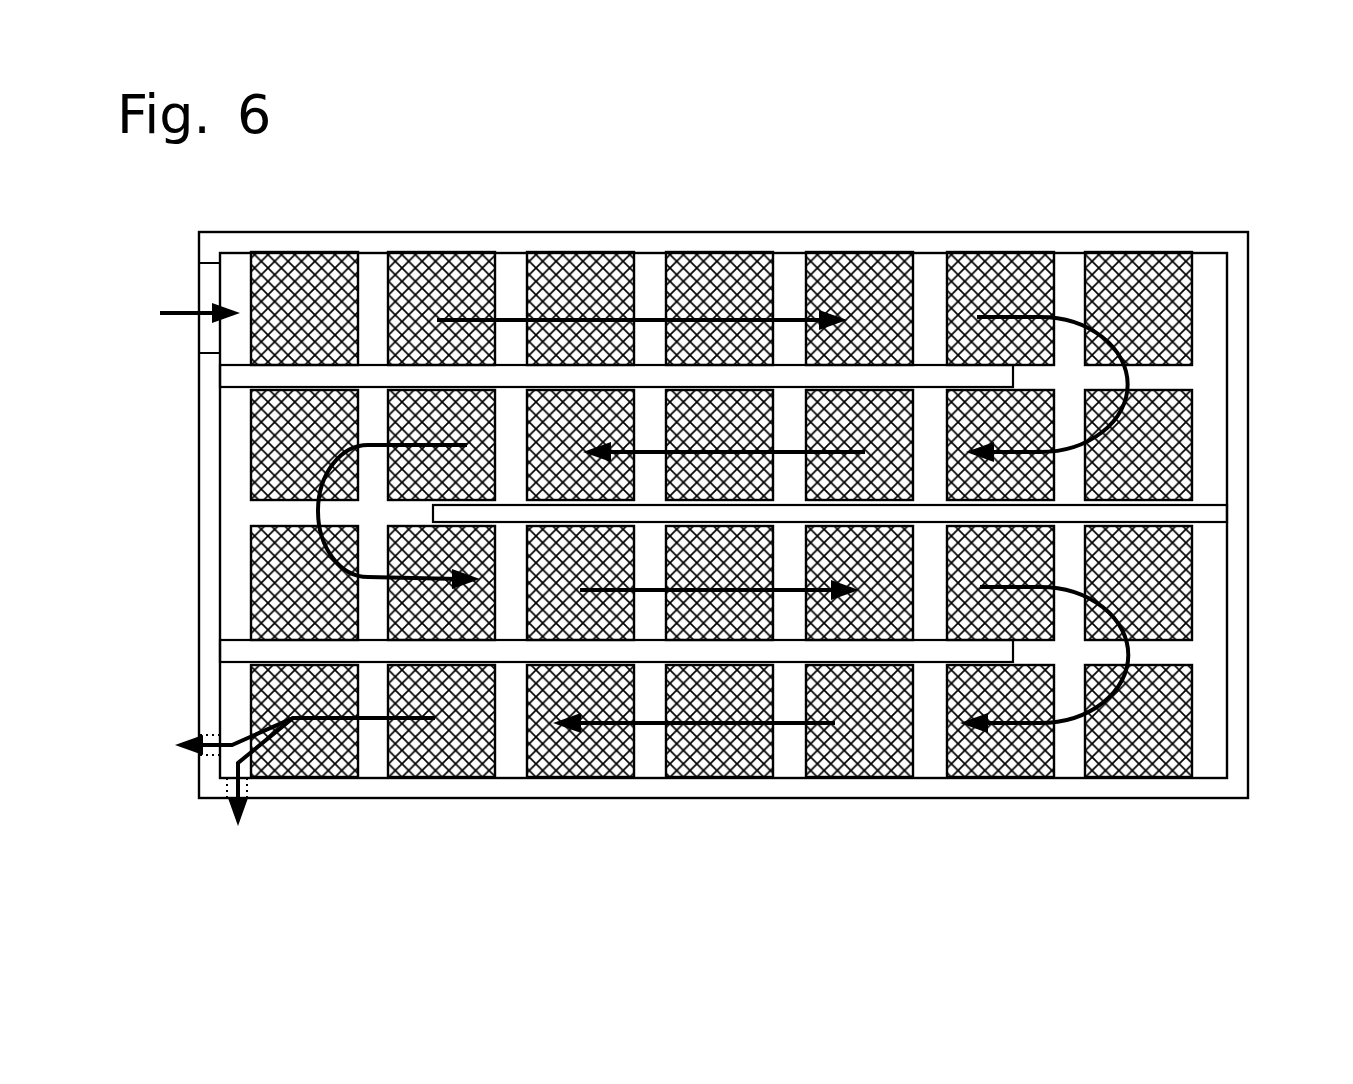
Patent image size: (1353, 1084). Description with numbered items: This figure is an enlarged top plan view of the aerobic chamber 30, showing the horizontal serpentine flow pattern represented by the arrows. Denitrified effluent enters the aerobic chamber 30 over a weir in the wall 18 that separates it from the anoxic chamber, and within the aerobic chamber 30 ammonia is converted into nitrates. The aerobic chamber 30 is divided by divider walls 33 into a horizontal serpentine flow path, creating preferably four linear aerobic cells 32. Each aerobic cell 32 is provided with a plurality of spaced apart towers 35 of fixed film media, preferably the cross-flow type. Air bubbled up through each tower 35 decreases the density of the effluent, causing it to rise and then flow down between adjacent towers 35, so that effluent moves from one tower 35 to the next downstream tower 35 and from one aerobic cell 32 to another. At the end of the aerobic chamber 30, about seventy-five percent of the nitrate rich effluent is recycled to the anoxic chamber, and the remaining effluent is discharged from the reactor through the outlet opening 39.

The wall 18 is at (208, 556).
The aerobic chamber 30 is at (1100, 198).
The aerobic cell 32 is at (932, 286).
The divider wall 33 is at (655, 380).
The tower 35 is at (540, 250).
The outlet opening 39 is at (223, 788).